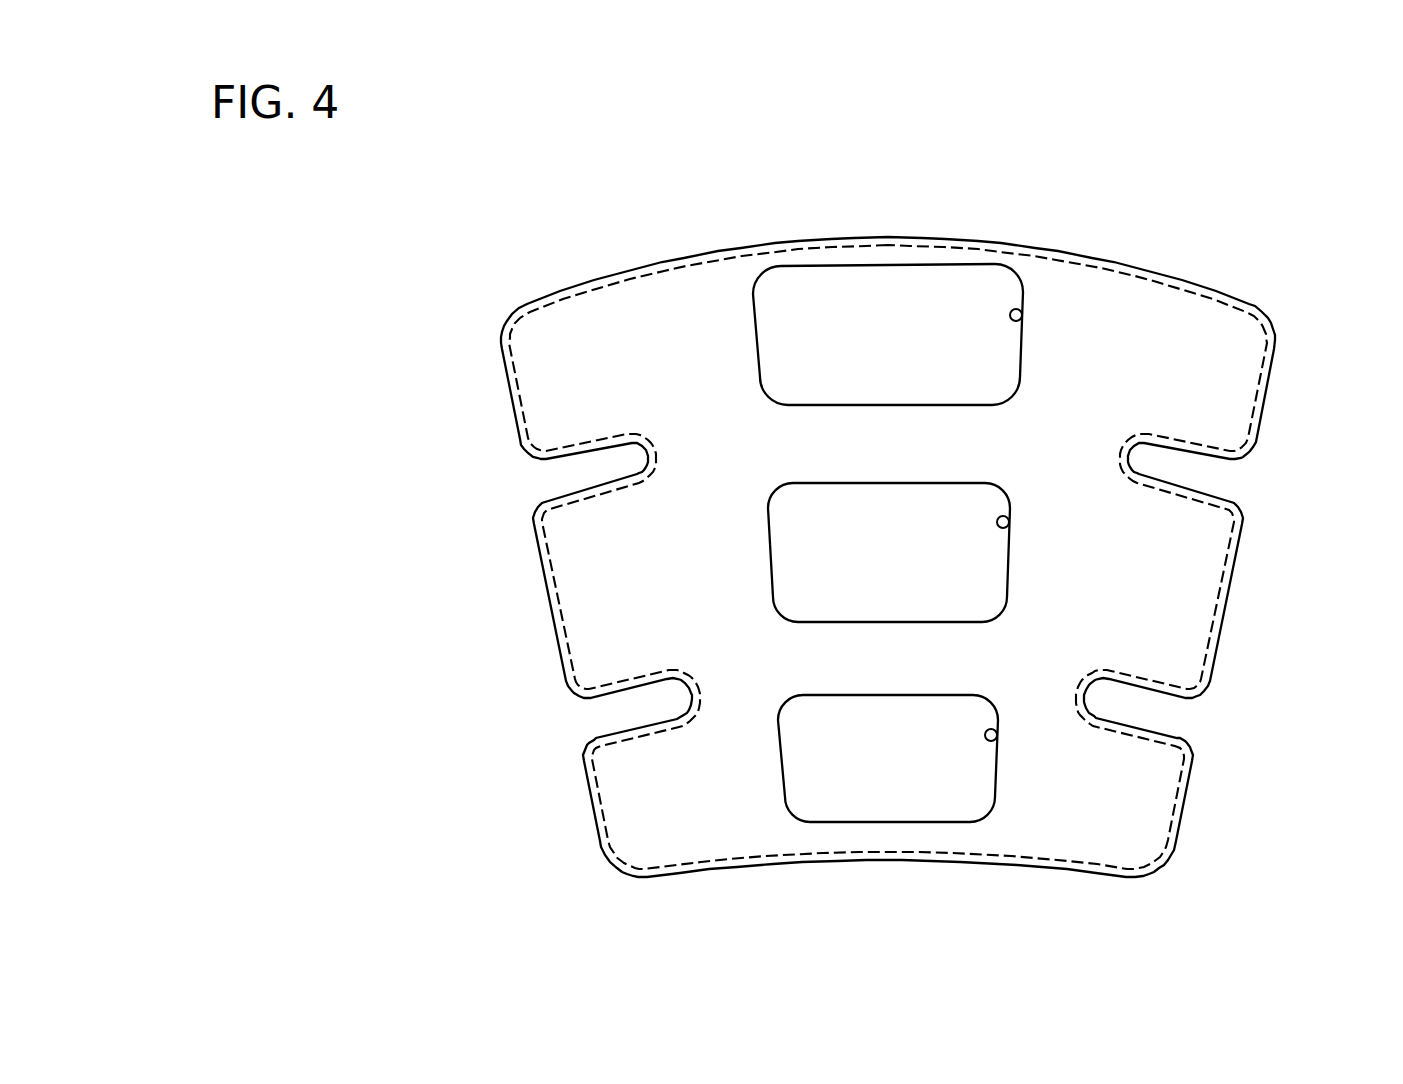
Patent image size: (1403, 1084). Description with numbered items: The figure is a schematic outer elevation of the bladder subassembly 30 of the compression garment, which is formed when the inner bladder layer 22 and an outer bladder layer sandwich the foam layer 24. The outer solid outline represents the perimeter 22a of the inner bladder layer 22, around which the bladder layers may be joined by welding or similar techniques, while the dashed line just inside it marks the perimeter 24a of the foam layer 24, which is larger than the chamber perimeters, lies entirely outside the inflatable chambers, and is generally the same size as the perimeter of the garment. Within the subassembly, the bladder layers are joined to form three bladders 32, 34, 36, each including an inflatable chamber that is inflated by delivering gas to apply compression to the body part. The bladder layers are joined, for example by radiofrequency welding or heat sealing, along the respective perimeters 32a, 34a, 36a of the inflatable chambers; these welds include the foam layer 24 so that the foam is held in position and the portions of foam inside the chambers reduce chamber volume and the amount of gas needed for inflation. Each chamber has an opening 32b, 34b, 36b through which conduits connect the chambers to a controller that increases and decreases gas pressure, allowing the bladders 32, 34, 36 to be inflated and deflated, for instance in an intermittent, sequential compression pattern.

The bladder subassembly 30 is at (1250, 220).
The inner bladder layer 22 is at (1223, 352).
The perimeter of inner bladder layer 22a is at (1268, 406).
The foam layer 24 is at (580, 377).
The perimeter of foam layer 24a is at (577, 298).
The bladder 32 is at (978, 356).
The perimeter of inflatable chamber 32a is at (1020, 372).
The opening in inflatable chamber 32b is at (1022, 313).
The bladder 34 is at (970, 560).
The perimeter of inflatable chamber 34a is at (1006, 597).
The opening in inflatable chamber 34b is at (1006, 521).
The bladder 36 is at (948, 775).
The perimeter of inflatable chamber 36a is at (1000, 785).
The opening in inflatable chamber 36b is at (996, 737).